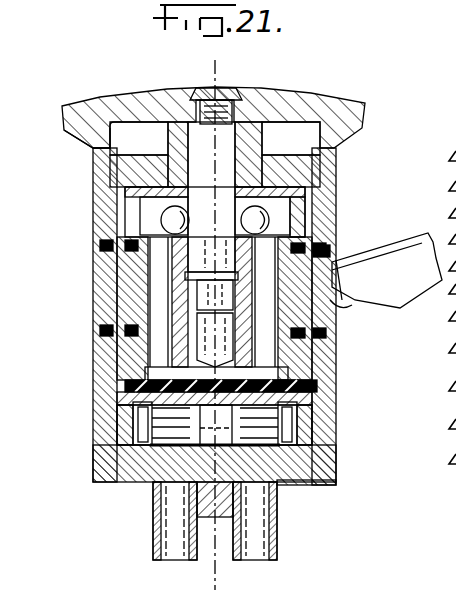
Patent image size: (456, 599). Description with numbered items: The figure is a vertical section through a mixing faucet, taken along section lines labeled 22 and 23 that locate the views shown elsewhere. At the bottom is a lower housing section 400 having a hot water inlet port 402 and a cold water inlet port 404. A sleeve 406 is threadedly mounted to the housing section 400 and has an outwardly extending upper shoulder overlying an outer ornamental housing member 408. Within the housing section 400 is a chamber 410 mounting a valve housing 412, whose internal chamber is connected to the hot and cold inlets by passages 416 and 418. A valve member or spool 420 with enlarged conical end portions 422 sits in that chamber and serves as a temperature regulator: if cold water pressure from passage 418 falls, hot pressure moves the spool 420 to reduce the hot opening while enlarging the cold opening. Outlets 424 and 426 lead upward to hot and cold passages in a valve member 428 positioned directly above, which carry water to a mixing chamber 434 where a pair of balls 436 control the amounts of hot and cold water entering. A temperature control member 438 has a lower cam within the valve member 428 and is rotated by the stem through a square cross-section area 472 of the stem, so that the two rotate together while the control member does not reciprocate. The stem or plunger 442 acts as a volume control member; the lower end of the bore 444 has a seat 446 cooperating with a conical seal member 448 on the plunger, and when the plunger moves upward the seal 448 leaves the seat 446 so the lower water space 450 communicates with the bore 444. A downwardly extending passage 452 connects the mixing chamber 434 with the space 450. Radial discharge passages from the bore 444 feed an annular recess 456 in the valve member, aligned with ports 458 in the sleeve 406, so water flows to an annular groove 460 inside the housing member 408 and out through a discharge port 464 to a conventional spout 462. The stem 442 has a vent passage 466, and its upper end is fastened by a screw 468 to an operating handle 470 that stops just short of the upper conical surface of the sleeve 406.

The section line 22- 22 is at (190, 70).
The section line 23- 23 is at (84, 425).
The lower housing section 400 is at (147, 467).
The hot water inlet port 402 is at (170, 497).
The cold water inlet port 404 is at (260, 495).
The sleeve 406 is at (338, 145).
The outer ornamental housing member 408 is at (100, 232).
The chamber 410 is at (123, 447).
The valve housing 412 is at (308, 394).
The passage 416 is at (195, 452).
The passage 418 is at (301, 483).
The valve member or spool 420 is at (152, 472).
The enlarged conical end portions 422 is at (128, 388).
The outlet 424 is at (150, 450).
The outlet 426 is at (272, 490).
The valve member 428 is at (128, 330).
The mixing chamber 434 is at (147, 208).
The balls 436 is at (162, 218).
The temperature control member 438 is at (93, 150).
The stem or plunger 442 is at (172, 152).
The bore 444 is at (198, 292).
The seat 446 is at (288, 350).
The conical seal member 448 is at (300, 350).
The space 450 is at (160, 260).
The downwardly extending passage 452 is at (284, 217).
The annular recess 456 is at (118, 270).
The ports 458 is at (330, 252).
The annular recess or groove 460 is at (350, 305).
The spout 462 is at (437, 222).
The discharge port 464 is at (388, 248).
The vent passage 466 is at (207, 140).
The screw 468 is at (231, 110).
The operating handle 470 is at (353, 105).
The square cross-section area 472 is at (258, 145).